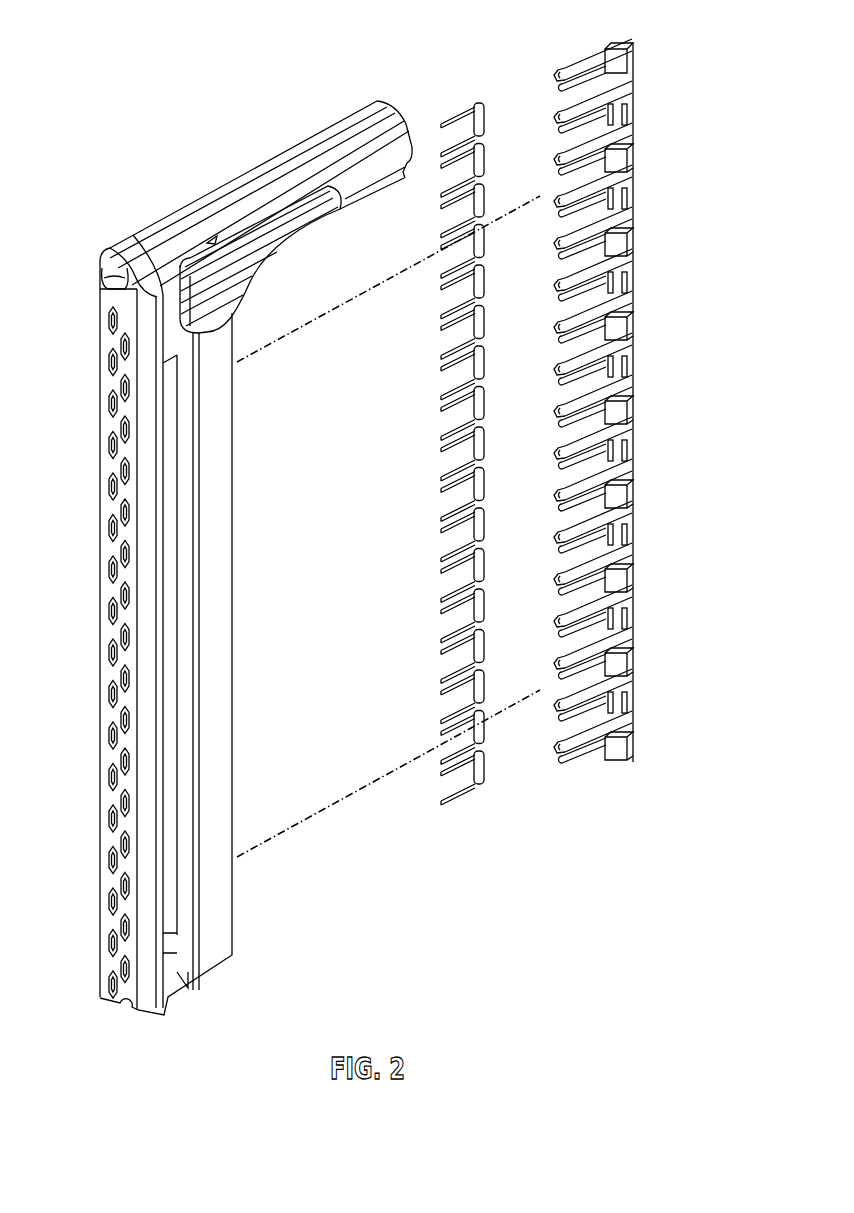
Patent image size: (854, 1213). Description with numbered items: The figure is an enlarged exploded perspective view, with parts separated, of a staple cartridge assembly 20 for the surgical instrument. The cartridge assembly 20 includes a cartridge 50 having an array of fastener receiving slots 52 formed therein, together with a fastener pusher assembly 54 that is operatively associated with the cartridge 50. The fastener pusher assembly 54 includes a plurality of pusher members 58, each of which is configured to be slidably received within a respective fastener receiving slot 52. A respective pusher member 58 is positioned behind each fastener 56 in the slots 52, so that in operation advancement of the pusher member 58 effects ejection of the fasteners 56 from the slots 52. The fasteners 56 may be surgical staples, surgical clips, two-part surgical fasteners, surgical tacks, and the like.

The cartridge assembly 20 is at (392, 527).
The cartridge 50 is at (222, 187).
The fastener receiving slots 52 is at (123, 552).
The fastener pusher assembly 54 is at (643, 410).
The fasteners 56 is at (468, 805).
The pusher members 58 is at (604, 748).